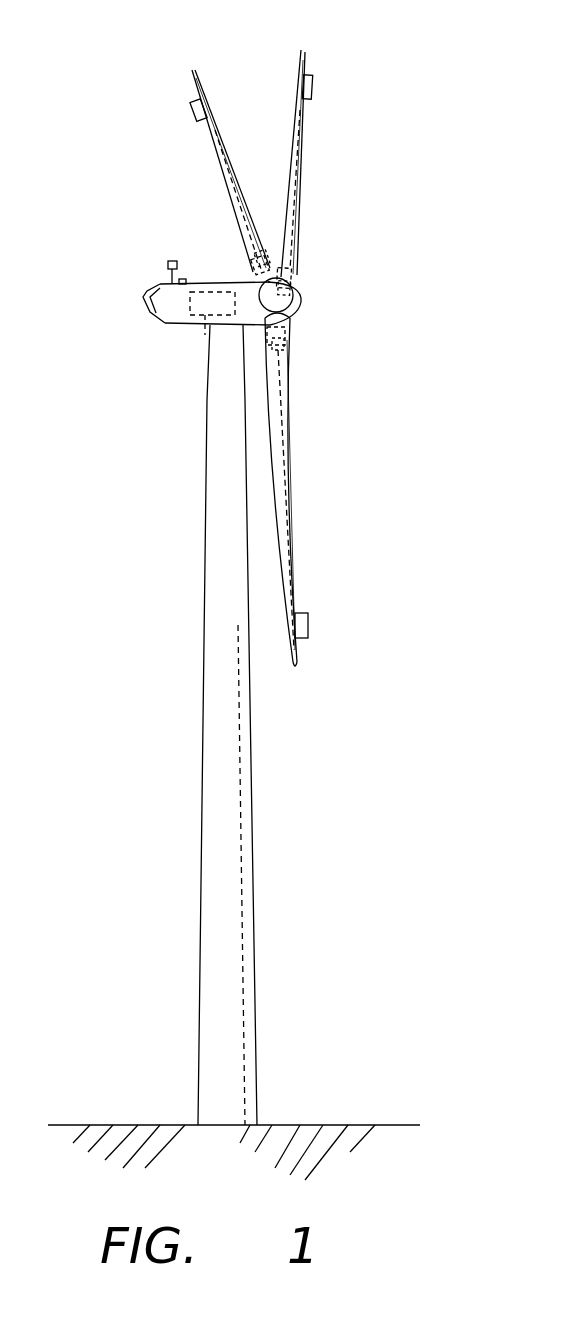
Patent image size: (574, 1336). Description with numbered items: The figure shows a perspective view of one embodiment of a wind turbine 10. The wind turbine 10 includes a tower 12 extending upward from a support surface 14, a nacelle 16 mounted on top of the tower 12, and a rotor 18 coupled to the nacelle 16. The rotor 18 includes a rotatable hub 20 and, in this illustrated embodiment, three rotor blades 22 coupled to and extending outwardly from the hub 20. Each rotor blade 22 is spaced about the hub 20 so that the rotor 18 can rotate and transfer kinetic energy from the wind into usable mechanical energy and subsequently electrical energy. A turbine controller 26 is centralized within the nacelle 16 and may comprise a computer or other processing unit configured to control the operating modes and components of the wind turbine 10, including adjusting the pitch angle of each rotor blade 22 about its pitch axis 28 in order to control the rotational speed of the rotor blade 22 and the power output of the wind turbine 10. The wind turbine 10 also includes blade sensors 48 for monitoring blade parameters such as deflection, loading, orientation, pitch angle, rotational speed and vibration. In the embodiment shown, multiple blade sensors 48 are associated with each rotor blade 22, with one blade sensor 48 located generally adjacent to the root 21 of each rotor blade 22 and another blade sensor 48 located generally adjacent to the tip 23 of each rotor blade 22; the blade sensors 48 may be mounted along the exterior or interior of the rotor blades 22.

The wind turbine 10 is at (435, 89).
The tower 12 is at (213, 836).
The support surface 14 is at (128, 1124).
The nacelle 16 is at (183, 327).
The rotor 18 is at (360, 290).
The rotatable hub 20 is at (297, 297).
The root 21 is at (262, 283).
The rotor blade 22 is at (238, 157).
The tip 23 is at (193, 64).
The turbine controller 26 is at (205, 335).
The pitch axis 28 is at (230, 193).
The blade sensor 48 is at (193, 117).